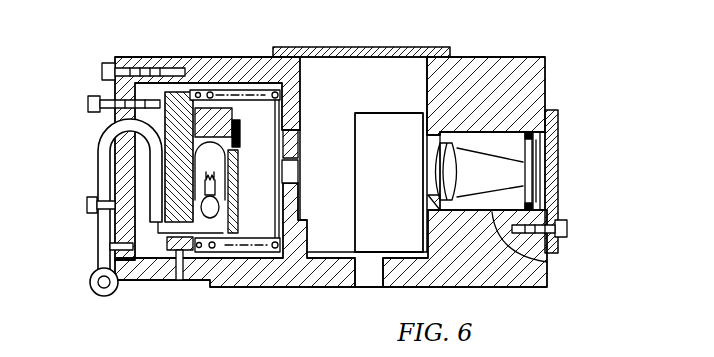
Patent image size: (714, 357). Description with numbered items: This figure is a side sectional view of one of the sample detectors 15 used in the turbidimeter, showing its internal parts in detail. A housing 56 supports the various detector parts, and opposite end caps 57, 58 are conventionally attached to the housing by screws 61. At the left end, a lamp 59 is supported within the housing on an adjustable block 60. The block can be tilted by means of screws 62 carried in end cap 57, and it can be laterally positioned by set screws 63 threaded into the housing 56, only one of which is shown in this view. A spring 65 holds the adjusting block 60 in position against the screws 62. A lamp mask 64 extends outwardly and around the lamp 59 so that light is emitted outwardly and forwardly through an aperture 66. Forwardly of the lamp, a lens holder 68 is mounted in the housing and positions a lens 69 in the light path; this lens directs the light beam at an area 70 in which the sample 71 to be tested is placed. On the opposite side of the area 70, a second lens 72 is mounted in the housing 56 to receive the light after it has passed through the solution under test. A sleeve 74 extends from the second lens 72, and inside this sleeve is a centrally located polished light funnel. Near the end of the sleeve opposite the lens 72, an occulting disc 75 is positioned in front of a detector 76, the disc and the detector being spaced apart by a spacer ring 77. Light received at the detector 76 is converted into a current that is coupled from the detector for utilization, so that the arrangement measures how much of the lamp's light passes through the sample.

The detector 15 is at (462, 55).
The housing 56 is at (277, 290).
The end cap 57 is at (130, 284).
The end cap 58 is at (558, 113).
The lamp 59 is at (232, 172).
The adjustable block 60 is at (175, 102).
The screws 61 is at (103, 68).
The screws 62 is at (86, 103).
The set screws 63 is at (178, 281).
The lamp mask 64 is at (238, 219).
The spring 65 is at (210, 97).
The aperture 66 is at (228, 177).
The lens holder 68 is at (297, 140).
The lens 69 is at (300, 172).
The area 70 is at (355, 220).
The sample 71 is at (390, 235).
The second lens 72 is at (433, 173).
The sleeve 74 is at (547, 262).
The occulting disc 75 is at (520, 163).
The detector 76 is at (545, 167).
The spacer ring 77 is at (540, 150).